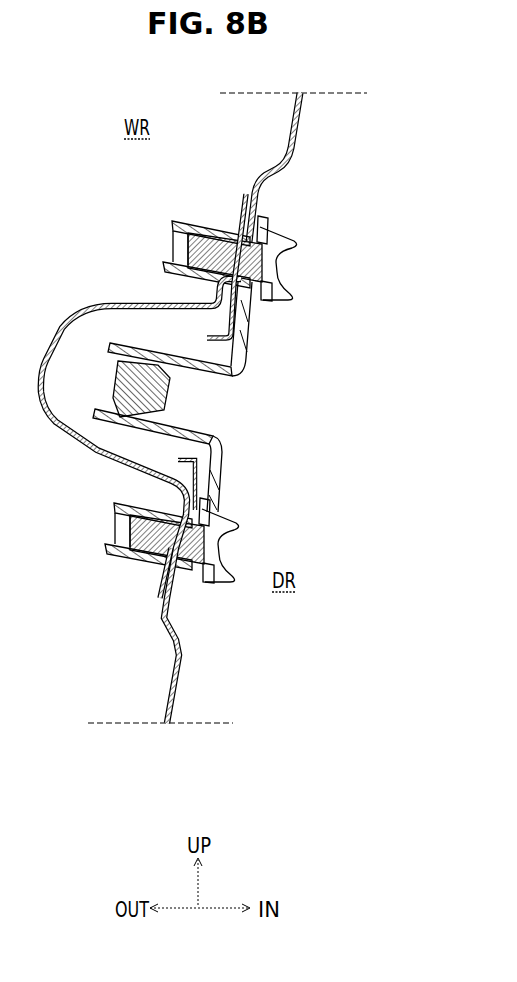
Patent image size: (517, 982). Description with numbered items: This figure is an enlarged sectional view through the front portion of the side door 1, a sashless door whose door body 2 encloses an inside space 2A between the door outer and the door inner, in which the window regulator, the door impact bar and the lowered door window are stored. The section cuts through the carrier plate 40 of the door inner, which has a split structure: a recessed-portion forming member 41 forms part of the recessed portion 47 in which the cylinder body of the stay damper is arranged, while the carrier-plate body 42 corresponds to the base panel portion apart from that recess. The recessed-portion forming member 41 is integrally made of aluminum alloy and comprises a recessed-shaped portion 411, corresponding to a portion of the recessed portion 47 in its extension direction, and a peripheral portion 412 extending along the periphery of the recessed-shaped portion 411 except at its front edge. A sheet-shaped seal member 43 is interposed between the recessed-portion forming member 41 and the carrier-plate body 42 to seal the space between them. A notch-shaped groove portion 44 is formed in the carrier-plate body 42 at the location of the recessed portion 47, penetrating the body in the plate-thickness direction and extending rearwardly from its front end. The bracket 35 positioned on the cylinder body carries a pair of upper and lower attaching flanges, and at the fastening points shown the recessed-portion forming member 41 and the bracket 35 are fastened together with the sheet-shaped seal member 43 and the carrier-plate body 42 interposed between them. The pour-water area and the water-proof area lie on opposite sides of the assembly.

The side door 1 is at (271, 167).
The door body 2 is at (271, 167).
The inside space 2A is at (171, 177).
The bracket 35 is at (214, 399).
The carrier plate 40 is at (148, 441).
The recessed-portion forming member 41 is at (129, 441).
The recessed-shaped portion 411 is at (73, 322).
The peripheral portion 412 is at (235, 211).
The carrier-plate body 42 is at (182, 677).
The sheet-shaped seal member 43 is at (158, 616).
The notch-shaped groove portion 44 is at (198, 432).
The recessed portion 47 is at (92, 385).